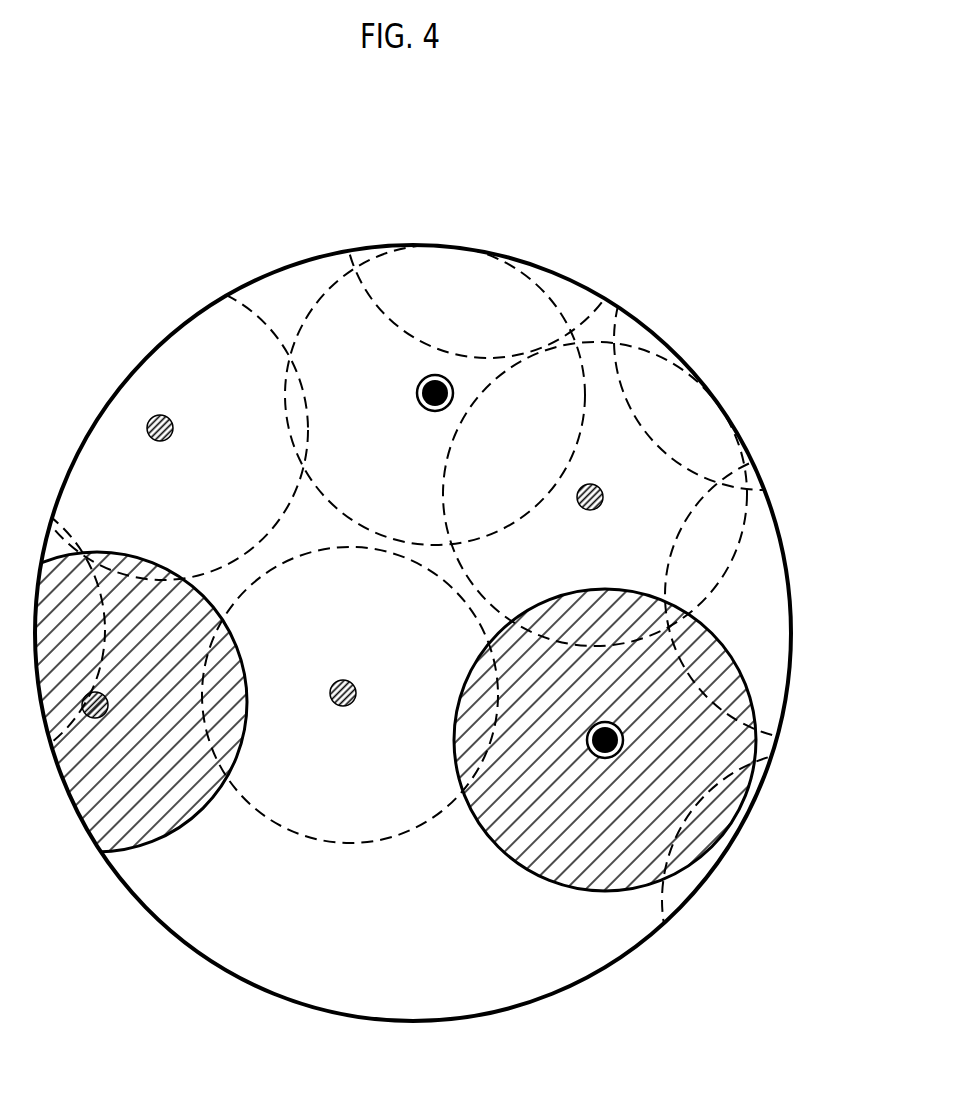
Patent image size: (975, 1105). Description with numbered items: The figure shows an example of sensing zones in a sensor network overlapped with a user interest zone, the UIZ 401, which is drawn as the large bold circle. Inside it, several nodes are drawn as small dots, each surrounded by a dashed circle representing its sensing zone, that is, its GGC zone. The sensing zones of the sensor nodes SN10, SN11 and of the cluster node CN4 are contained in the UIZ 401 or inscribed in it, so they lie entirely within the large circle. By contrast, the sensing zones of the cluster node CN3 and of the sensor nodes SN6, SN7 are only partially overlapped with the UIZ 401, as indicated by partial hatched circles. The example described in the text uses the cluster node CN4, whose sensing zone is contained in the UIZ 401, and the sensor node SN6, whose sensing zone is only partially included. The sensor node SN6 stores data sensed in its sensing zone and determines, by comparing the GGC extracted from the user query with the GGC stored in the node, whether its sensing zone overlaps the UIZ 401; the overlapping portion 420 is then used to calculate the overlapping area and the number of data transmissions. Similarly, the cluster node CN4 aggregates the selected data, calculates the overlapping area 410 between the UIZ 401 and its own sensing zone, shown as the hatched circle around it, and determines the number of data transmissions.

The UIZ 401 is at (653, 327).
The overlapping area 410 is at (727, 653).
The portion of the sensing zone 420 is at (144, 848).
The cluster node CN3 is at (436, 373).
The cluster node CN4 is at (607, 720).
The sensor node SN6 is at (95, 686).
The sensor node SN7 is at (162, 408).
The sensor node SN10 is at (345, 674).
The sensor node SN11 is at (590, 478).